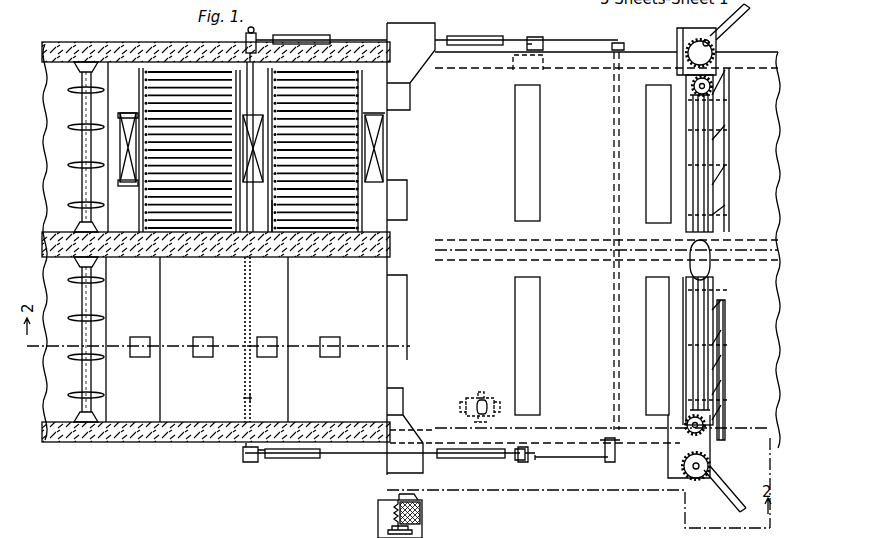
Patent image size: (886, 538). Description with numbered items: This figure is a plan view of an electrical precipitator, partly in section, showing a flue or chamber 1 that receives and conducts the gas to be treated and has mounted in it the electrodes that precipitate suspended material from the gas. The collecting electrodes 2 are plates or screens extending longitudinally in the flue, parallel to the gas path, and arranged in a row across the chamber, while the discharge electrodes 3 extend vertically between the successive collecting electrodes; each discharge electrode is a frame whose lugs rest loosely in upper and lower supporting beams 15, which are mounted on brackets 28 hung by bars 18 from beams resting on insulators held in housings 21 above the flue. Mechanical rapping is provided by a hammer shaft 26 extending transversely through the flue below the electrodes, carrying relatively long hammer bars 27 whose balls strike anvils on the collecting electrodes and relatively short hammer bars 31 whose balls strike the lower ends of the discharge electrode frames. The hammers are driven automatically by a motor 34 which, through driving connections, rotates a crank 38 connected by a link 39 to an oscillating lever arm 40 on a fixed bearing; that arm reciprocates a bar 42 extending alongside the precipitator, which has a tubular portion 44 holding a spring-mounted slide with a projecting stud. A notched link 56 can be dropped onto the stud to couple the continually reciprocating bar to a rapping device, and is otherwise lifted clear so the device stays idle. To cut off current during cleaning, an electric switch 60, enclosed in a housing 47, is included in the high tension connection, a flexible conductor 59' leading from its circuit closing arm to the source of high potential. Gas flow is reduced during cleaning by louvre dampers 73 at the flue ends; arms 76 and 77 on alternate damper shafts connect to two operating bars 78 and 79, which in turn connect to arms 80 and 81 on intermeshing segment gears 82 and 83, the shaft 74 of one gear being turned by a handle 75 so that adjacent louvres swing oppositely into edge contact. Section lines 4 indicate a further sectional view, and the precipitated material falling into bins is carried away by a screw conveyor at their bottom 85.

The flue or chamber 1 is at (120, 68).
The collecting electrodes 2 is at (195, 68).
The discharge electrodes 3 is at (275, 232).
The section line 4 is at (378, 10).
The supporting beams 15 is at (247, 58).
The bars 18 is at (126, 187).
The housings 21 is at (398, 334).
The hammer shaft 26 is at (249, 234).
The long hammer bars 27 is at (240, 400).
The brackets 28 is at (133, 113).
The short hammer bars 31 is at (251, 398).
The motor 34 is at (466, 400).
The crank 38 is at (607, 462).
The link 39 is at (553, 462).
The oscillating lever arm 40 is at (529, 467).
The reciprocating bar 42 is at (425, 462).
The tubular portion 44 is at (290, 457).
The housing 47 is at (385, 468).
The notched link 56 is at (268, 452).
The flexible conductor 59' is at (427, 503).
The electric switch 60 is at (371, 519).
The louvre dampers 73 is at (72, 392).
The shaft 74 is at (712, 44).
The handle 75 is at (746, 10).
The arms 76 is at (728, 112).
The arms 77 is at (686, 124).
The operating bar 78 is at (724, 398).
The operating bar 79 is at (676, 388).
The arm 80 is at (706, 426).
The arm 81 is at (680, 465).
The segment gear 82 is at (708, 86).
The segment gear 83 is at (683, 47).
The bottom of the bins 85 is at (330, 338).